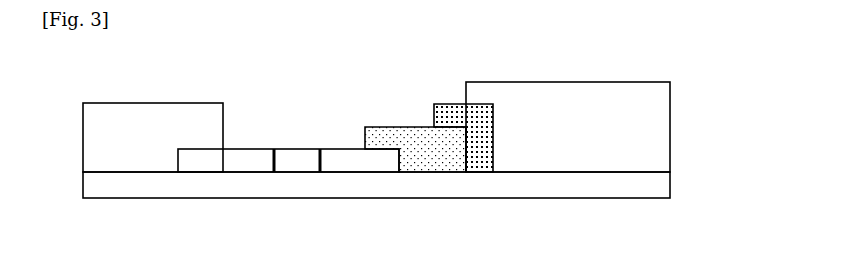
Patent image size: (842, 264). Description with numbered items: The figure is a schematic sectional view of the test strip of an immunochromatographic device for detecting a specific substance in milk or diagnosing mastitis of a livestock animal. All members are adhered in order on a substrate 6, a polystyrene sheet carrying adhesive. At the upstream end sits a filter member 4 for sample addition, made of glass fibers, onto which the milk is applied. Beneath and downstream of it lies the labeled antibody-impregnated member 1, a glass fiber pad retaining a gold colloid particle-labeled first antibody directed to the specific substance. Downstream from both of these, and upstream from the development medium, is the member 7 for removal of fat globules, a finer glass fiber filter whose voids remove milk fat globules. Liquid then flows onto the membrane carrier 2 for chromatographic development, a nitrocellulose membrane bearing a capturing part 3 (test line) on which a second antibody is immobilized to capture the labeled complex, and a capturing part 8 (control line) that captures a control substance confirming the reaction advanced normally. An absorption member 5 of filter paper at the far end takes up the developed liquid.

The labeled antibody-impregnated member 1 is at (459, 111).
The membrane carrier for chromatographic development 2 is at (365, 165).
The capturing part (test line) 3 is at (330, 116).
The filter member for sample addition 4 is at (651, 81).
The absorption member 5 is at (164, 101).
The substrate 6 is at (184, 183).
The filter member for removal of fat globules 7 is at (450, 156).
The capturing part (control line) 8 is at (285, 116).